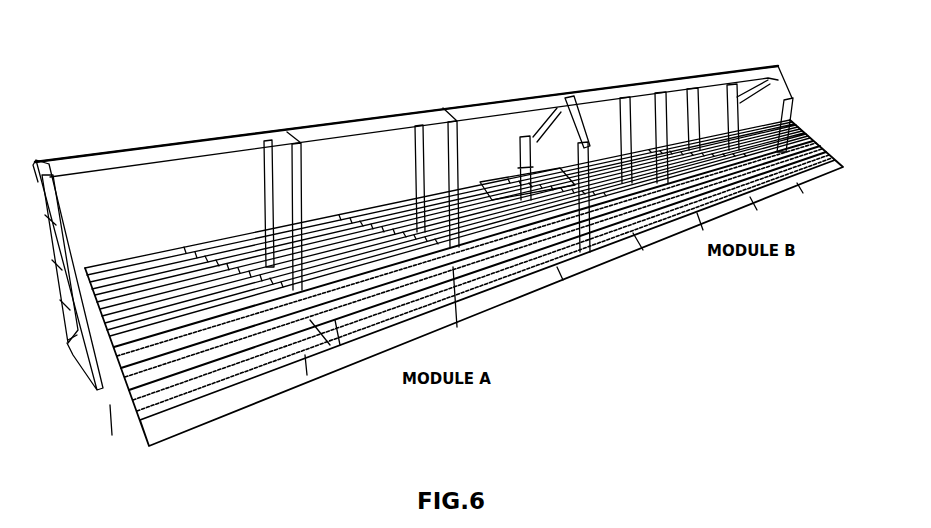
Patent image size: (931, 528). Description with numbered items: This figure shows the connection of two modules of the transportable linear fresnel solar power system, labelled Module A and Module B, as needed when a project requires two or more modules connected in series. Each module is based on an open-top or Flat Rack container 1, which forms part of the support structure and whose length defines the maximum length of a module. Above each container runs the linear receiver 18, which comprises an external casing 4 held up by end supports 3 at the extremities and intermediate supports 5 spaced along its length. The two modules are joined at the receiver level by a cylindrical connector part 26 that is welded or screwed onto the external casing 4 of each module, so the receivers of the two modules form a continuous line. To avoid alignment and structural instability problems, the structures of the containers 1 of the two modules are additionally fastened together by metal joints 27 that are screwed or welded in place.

The Flat Rack container 1 is at (90, 330).
The end supports 3 is at (70, 207).
The external casing 4 is at (372, 123).
The intermediate supports 5 is at (293, 183).
The linear receiver 18 is at (310, 126).
The cylindrical connector part 26 is at (557, 100).
The metal joints 27 is at (520, 173).